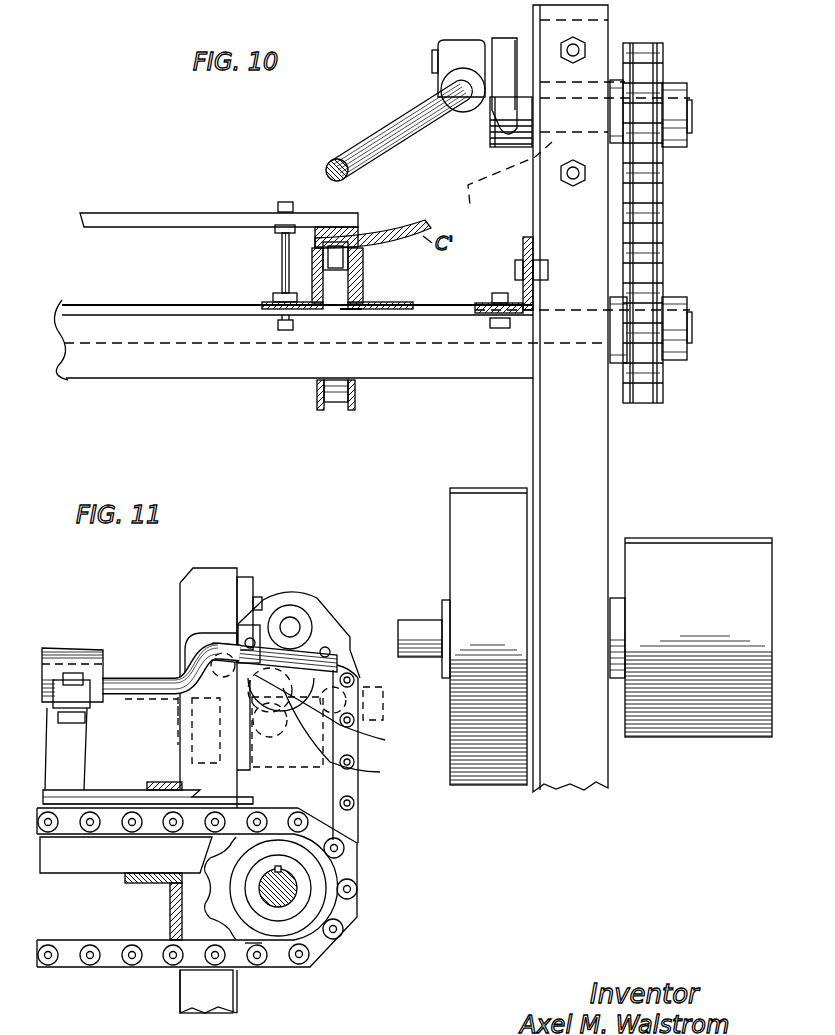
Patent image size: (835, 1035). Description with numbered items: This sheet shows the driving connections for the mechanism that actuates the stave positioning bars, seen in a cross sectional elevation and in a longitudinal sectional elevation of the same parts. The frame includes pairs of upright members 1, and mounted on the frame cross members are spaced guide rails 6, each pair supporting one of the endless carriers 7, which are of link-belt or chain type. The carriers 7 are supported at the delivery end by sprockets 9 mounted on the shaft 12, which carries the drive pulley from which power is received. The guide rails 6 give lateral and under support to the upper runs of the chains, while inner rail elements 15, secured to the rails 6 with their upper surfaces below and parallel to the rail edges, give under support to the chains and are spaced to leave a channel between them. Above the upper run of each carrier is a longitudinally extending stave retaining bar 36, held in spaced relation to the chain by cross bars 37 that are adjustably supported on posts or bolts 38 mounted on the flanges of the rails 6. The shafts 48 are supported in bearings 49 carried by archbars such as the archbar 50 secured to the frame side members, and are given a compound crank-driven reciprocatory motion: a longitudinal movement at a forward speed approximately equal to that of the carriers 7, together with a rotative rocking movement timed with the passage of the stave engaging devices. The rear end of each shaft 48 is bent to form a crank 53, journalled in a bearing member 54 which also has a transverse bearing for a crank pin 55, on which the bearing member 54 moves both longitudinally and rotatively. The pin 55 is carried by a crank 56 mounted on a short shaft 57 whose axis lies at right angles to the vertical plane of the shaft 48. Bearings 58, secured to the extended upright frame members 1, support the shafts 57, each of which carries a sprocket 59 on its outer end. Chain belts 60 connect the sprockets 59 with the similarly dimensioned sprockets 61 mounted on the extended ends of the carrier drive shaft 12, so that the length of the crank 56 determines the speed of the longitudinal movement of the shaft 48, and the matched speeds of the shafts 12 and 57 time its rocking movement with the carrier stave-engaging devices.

In FIG. 10, the upright members 1 is at (545, 447).
In FIG. 11, the upright members 1 is at (208, 568).
In FIG. 10, the guide rails 6 is at (363, 290).
In FIG. 10, the endless carriers 7 is at (363, 258).
In FIG. 11, the rear or delivery end sprockets 9 is at (266, 960).
In FIG. 10, the shaft 12 is at (693, 330).
In FIG. 11, the shaft 12 is at (299, 899).
In FIG. 10, the inner rail elements 15 is at (345, 310).
In FIG. 10, the stave retaining bar 36 is at (360, 228).
In FIG. 10, the cross bars 37 is at (228, 213).
In FIG. 10, the posts or bolts 38 is at (278, 275).
In FIG. 10, the shafts 48 is at (326, 165).
In FIG. 11, the shafts 48 is at (122, 676).
In FIG. 11, the bearings 49 is at (58, 652).
In FIG. 11, the archbar 50 is at (70, 768).
In FIG. 10, the crank 53 is at (420, 108).
In FIG. 11, the crank 53 is at (200, 641).
In FIG. 10, the bearing member 54 is at (451, 40).
In FIG. 11, the bearing member 54 is at (325, 646).
In FIG. 10, the crank pin 55 is at (432, 63).
In FIG. 11, the crank pin 55 is at (292, 622).
In FIG. 10, the crank 56 is at (500, 40).
In FIG. 11, the crank 56 is at (325, 722).
In FIG. 10, the short shaft 57 is at (490, 120).
In FIG. 11, the short shaft 57 is at (346, 736).
In FIG. 10, the bearings 58 is at (510, 173).
In FIG. 11, the bearings 58 is at (245, 578).
In FIG. 10, the sprocket 59 is at (675, 88).
In FIG. 10, the chain belts 60 is at (658, 202).
In FIG. 11, the chain belts 60 is at (352, 795).
In FIG. 10, the sprockets 61 is at (665, 358).